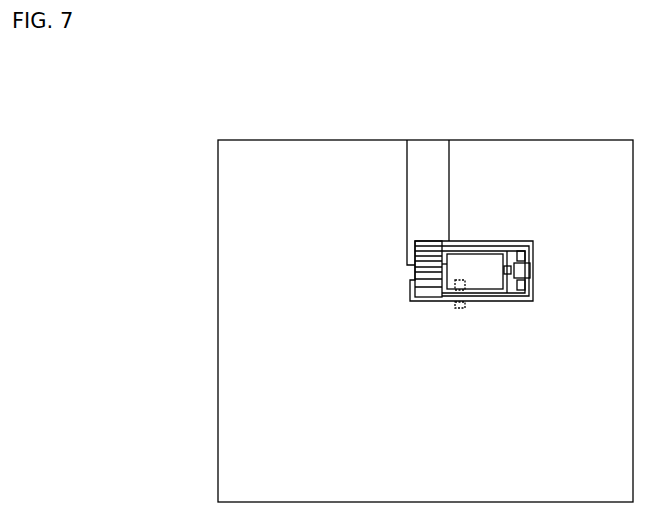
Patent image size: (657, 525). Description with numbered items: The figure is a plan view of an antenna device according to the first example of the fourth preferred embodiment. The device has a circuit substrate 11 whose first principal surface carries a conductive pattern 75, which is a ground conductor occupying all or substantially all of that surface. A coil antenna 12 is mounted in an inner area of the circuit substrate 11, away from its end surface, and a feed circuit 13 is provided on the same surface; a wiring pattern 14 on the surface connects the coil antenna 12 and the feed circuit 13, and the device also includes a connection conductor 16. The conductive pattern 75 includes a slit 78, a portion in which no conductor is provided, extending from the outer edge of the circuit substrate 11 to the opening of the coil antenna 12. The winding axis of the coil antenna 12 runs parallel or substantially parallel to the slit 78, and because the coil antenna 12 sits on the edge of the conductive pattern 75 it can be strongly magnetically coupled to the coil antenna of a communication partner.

The circuit substrate 11 is at (617, 139).
The slit 78 is at (427, 150).
The conductive pattern 75 is at (502, 150).
The feed circuit 13 is at (514, 310).
The wiring pattern 14 is at (497, 298).
The coil antenna 12 is at (430, 298).
The connection conductor 16 is at (460, 290).